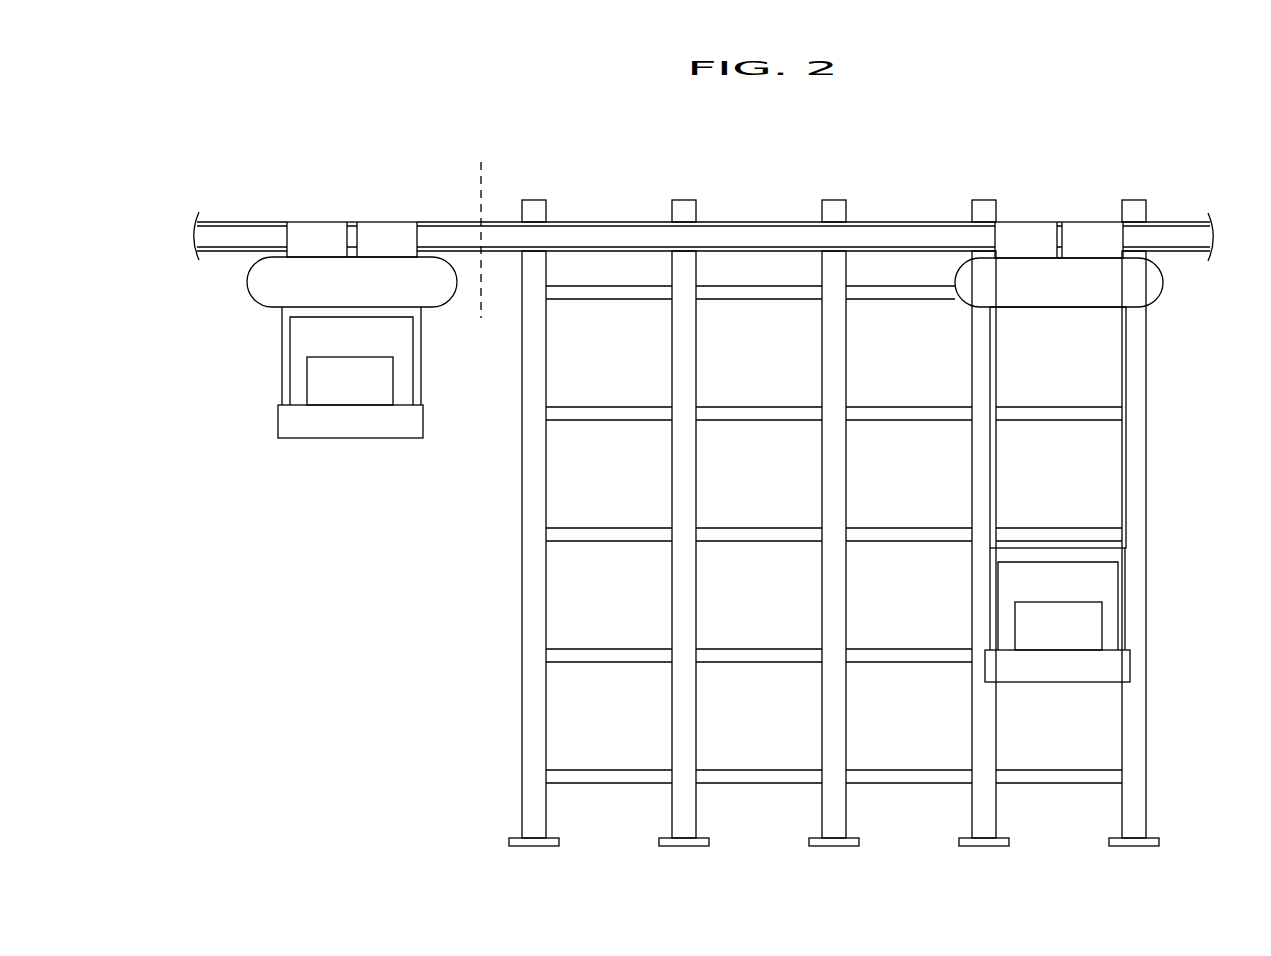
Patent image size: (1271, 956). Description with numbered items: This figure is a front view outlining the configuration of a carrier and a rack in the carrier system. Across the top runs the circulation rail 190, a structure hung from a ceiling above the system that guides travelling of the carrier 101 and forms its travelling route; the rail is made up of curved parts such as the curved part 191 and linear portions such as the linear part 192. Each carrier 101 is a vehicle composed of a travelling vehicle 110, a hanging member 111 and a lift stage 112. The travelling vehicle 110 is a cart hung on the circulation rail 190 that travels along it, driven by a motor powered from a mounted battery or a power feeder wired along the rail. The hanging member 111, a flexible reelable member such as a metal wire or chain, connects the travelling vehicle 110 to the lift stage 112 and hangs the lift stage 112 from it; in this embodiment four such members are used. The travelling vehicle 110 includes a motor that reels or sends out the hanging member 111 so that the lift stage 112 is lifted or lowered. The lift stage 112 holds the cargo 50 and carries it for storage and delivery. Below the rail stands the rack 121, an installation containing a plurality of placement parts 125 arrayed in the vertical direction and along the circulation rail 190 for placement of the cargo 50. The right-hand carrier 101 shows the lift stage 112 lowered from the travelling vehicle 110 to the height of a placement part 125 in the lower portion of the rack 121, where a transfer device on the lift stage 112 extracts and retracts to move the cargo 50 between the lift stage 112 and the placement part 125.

The circulation rail 190 is at (704, 222).
The curved part 191 is at (465, 219).
The linear part 192 is at (497, 219).
The travelling vehicle 110 is at (290, 270).
The carrier 101 is at (710, 424).
The hanging member 111 is at (1128, 510).
The lift stage 112 is at (278, 425).
The cargo 50 is at (335, 357).
The rack 121 is at (792, 523).
The placement part 125 is at (605, 528).